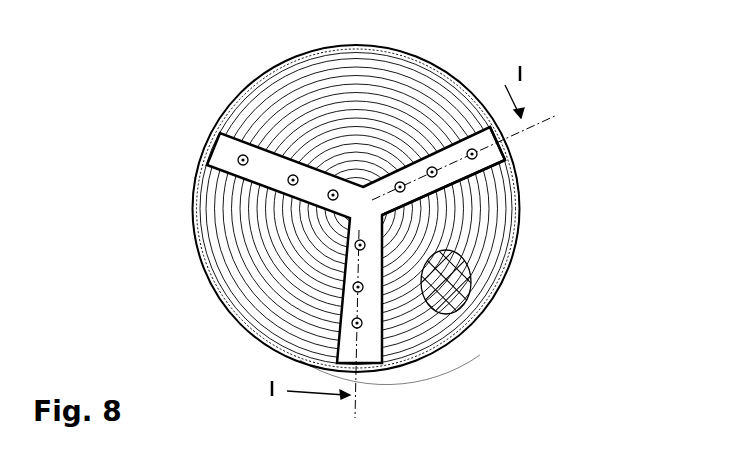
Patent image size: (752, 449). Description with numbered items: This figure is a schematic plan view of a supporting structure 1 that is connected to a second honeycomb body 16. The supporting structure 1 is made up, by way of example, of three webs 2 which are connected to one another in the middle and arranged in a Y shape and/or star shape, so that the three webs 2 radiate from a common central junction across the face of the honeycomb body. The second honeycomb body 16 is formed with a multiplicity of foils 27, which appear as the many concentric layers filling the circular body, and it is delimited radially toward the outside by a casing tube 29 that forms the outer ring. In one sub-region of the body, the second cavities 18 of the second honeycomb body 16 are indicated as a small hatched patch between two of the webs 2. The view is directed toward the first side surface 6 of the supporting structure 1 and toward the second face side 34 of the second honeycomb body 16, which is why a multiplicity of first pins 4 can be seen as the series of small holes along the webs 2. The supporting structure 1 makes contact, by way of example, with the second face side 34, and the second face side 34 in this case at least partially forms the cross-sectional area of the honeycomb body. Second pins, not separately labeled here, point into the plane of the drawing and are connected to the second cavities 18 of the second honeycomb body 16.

The supporting structure 1 is at (348, 213).
The webs 2 is at (228, 152).
The first pins 4 is at (484, 193).
The first side surface 6 is at (462, 172).
The second honeycomb body 16 is at (441, 337).
The second cavities 18 is at (467, 285).
The foils 27 is at (236, 272).
The casing tube 29 is at (250, 76).
The second face side 34 is at (390, 85).